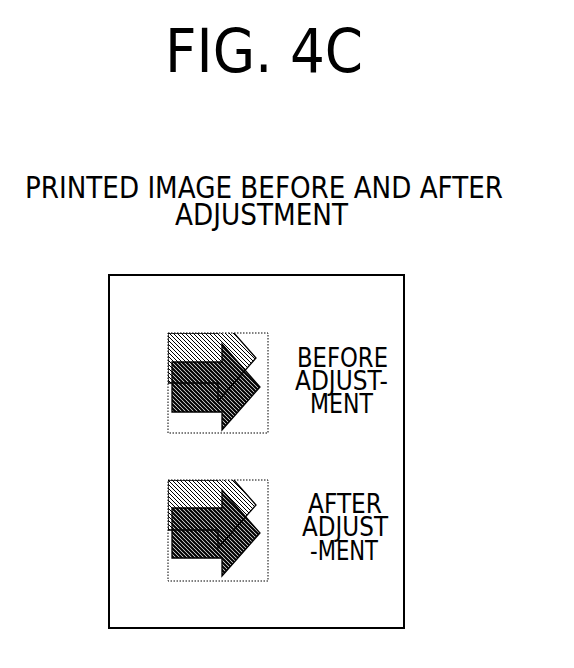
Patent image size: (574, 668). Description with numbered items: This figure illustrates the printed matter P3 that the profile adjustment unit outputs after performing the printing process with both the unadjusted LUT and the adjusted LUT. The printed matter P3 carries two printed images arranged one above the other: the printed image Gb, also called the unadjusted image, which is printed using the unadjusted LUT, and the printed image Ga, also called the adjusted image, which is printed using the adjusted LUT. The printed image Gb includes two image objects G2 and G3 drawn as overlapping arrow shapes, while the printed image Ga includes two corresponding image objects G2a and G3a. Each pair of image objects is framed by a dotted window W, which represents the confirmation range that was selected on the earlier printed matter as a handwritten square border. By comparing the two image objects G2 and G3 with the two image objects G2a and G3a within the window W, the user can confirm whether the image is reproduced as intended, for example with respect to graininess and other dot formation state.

The printed matter P3 is at (404, 333).
The window W is at (268, 405).
The printed image Gb is at (216, 359).
The printed image Ga is at (222, 507).
The image object G2 is at (243, 332).
The image object G3 is at (250, 356).
The image object G2a is at (243, 479).
The image object G3a is at (250, 506).